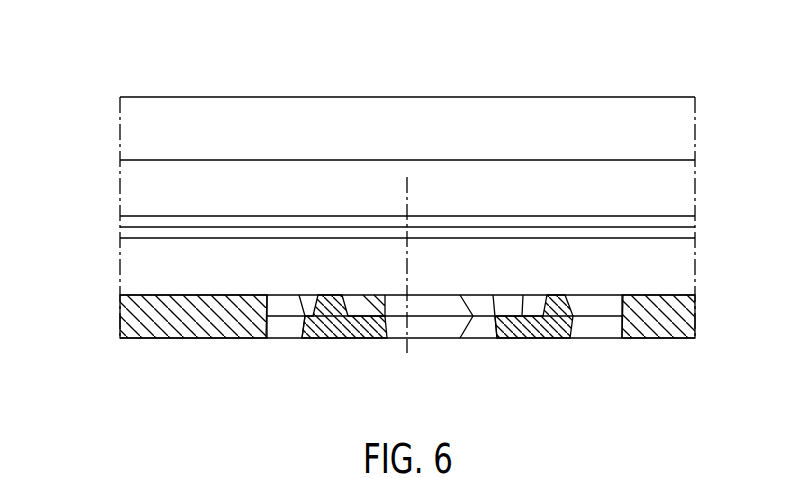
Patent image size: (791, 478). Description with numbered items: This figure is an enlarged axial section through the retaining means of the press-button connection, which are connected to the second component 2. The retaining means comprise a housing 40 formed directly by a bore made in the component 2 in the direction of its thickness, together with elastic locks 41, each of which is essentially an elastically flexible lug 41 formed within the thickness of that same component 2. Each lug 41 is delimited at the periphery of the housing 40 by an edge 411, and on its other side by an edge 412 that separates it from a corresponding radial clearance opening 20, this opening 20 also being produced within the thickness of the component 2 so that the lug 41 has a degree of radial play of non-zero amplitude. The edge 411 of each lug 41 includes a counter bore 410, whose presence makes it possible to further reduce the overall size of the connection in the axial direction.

The second component 2 is at (148, 317).
The radial clearance opening 20 is at (279, 304).
The housing 40 is at (418, 338).
The elastic lock 41 is at (320, 278).
The counter bore 410 is at (363, 295).
The edge 411 is at (385, 338).
The edge 412 is at (315, 318).